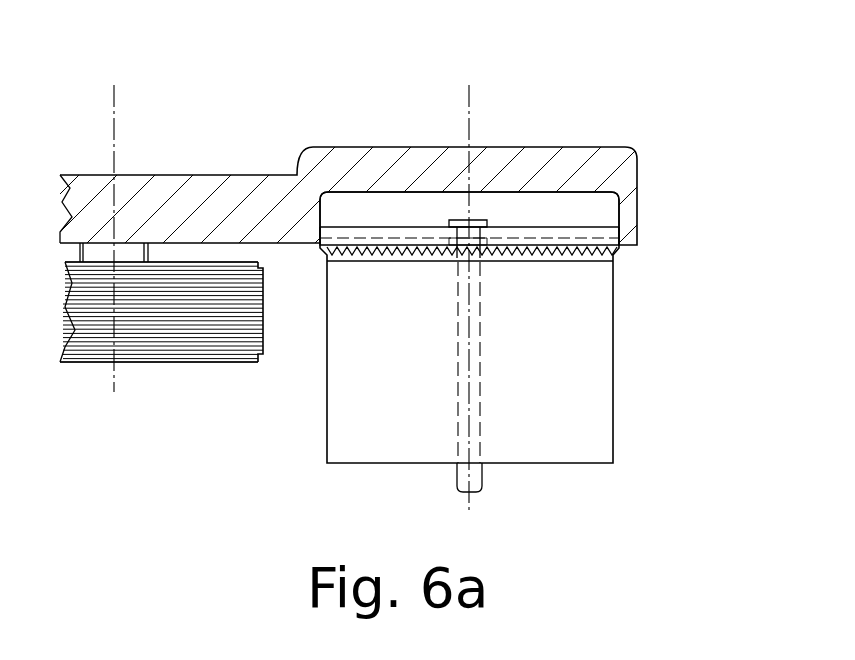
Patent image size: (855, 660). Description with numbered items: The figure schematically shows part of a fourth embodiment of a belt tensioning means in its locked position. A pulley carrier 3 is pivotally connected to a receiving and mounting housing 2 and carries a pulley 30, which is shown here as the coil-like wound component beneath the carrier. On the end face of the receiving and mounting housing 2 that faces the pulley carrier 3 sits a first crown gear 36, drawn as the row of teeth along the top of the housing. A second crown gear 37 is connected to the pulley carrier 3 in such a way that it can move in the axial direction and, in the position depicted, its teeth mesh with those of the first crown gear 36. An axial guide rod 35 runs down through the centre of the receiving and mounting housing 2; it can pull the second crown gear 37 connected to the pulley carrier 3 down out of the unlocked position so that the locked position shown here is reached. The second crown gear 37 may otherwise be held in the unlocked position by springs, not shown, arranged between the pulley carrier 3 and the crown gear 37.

The pulley carrier 3 is at (178, 195).
The pulley 30 is at (168, 327).
The second crown gear 37 is at (565, 237).
The first crown gear 36 is at (570, 262).
The receiving and mounting housing 2 is at (583, 367).
The axial guide rod 35 is at (475, 481).